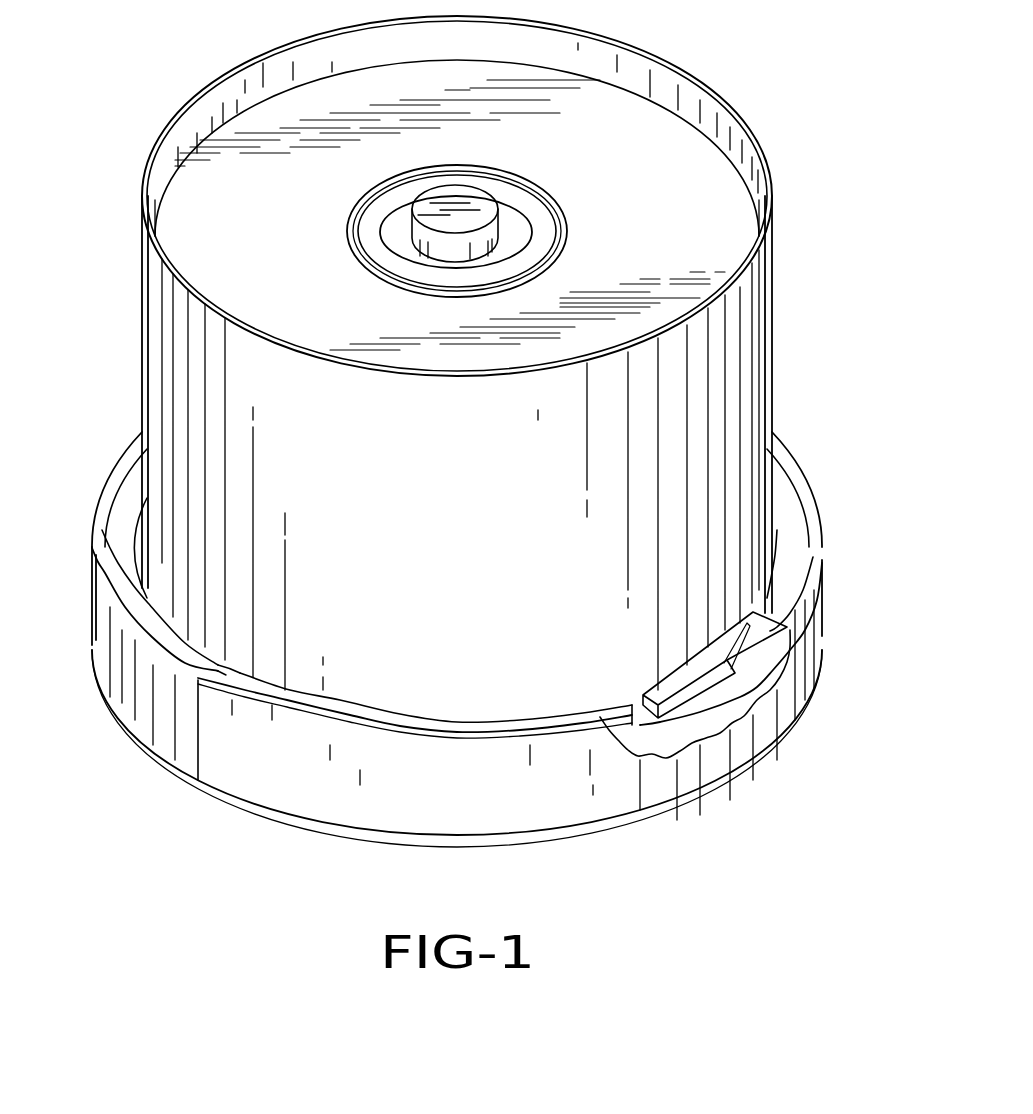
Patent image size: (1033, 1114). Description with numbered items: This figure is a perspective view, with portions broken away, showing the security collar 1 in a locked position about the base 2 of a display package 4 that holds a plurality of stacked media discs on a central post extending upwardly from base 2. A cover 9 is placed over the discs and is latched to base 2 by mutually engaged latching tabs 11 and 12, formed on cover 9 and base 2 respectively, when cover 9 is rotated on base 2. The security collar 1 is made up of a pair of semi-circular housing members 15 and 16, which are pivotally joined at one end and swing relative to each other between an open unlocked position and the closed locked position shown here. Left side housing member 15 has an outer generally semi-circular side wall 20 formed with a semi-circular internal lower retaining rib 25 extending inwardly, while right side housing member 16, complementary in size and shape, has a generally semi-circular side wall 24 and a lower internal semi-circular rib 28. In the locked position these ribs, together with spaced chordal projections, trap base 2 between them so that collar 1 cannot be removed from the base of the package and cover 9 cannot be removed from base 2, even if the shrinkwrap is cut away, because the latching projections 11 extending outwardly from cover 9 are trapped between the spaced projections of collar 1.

The security collar 1 is at (453, 459).
The base 2 is at (628, 700).
The display package 4 is at (485, 353).
The cover 9 is at (750, 358).
The latching tab 11 is at (768, 625).
The latching tab 12 is at (685, 683).
The left side housing member 15 is at (453, 667).
The right side housing member 16 is at (453, 667).
The outer side wall 20 is at (413, 800).
The side wall 24 is at (143, 688).
The internal lower retaining rib 25 is at (790, 497).
The lower internal semi-circular rib 28 is at (126, 500).